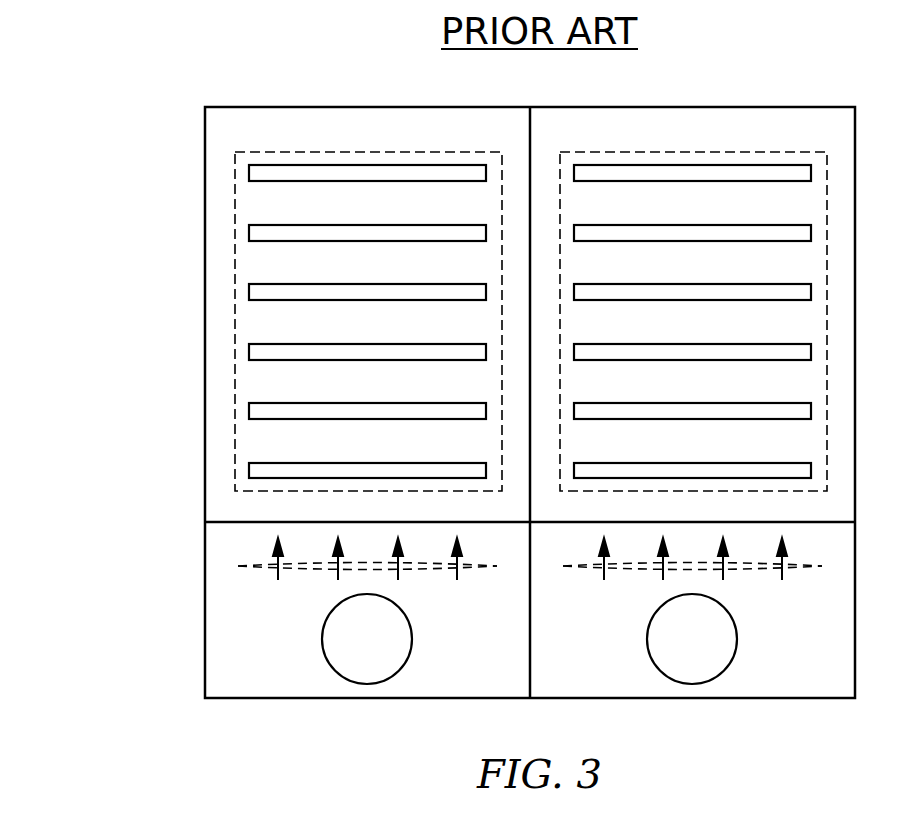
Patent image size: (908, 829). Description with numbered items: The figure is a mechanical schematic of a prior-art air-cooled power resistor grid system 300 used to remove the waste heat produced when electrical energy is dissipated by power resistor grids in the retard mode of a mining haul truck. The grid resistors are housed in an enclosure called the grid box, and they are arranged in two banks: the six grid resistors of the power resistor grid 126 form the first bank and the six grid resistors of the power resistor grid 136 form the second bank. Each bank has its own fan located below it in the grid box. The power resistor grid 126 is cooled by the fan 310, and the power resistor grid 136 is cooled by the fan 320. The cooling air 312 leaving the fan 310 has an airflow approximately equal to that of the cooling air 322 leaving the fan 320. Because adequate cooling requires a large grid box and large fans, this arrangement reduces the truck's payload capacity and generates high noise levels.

The air-cooled power resistor grid system 300 is at (133, 691).
The power resistor grid 126 is at (368, 305).
The power resistor grid 136 is at (693, 305).
The fan 310 is at (394, 639).
The fan 320 is at (719, 639).
The cooling air 312 is at (366, 571).
The cooling air 322 is at (691, 570).